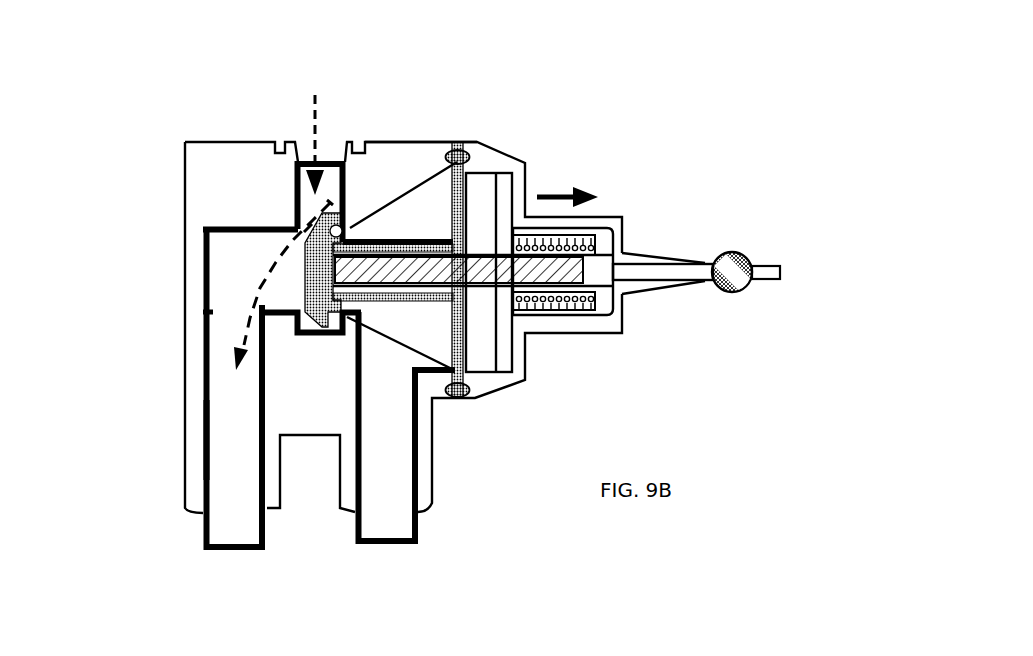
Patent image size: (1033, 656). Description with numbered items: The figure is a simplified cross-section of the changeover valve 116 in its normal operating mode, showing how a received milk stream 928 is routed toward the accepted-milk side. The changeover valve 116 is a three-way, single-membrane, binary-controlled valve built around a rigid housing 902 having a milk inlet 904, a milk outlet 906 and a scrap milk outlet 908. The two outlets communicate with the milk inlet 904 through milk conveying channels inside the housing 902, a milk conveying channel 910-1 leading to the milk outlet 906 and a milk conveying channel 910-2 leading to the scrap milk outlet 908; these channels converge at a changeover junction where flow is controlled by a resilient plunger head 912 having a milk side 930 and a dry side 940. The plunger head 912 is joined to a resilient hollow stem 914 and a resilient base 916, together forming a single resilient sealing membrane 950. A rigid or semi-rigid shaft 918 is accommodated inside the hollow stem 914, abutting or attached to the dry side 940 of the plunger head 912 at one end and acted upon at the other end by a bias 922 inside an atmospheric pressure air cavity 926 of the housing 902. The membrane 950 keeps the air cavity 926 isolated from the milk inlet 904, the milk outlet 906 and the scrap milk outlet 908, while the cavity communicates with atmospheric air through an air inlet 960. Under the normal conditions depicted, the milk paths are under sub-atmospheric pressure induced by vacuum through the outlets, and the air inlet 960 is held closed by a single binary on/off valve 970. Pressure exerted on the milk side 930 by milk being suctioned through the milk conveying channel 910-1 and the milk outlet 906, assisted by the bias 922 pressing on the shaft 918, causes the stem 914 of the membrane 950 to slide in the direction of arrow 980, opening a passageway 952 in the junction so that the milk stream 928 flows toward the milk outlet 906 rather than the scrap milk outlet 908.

The housing 902 is at (202, 142).
The milk inlet 904 is at (331, 115).
The milk outlet 906 is at (213, 582).
The scrap milk outlet 908 is at (382, 582).
The milk conveying channel 910-1 is at (203, 442).
The milk conveying channel 910-2 is at (428, 504).
The resilient plunger head 912 is at (288, 310).
The resilient hollow stem 914 is at (408, 240).
The resilient base 916 is at (497, 399).
The shaft 918 is at (583, 240).
The bias 922 is at (577, 302).
The atmospheric pressure air cavity 926 is at (488, 326).
The milk stream 928 is at (313, 127).
The milk side 930 is at (303, 226).
The dry side 940 is at (363, 308).
The resilient sealing membrane 950 is at (463, 207).
The passageway 952 is at (282, 256).
The air inlet 960 is at (664, 279).
The binary valve 970 is at (741, 293).
The arrow 980 is at (598, 194).
The changeover valve 116 is at (464, 102).